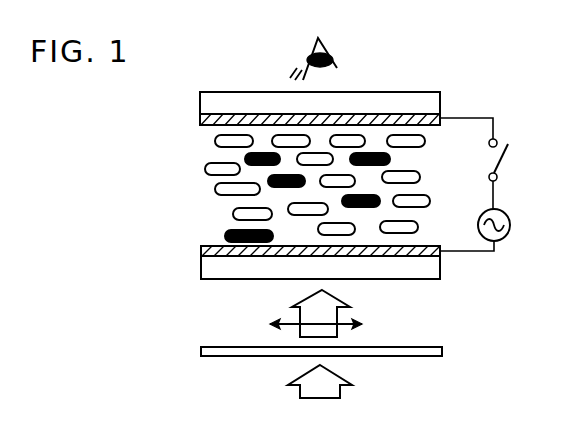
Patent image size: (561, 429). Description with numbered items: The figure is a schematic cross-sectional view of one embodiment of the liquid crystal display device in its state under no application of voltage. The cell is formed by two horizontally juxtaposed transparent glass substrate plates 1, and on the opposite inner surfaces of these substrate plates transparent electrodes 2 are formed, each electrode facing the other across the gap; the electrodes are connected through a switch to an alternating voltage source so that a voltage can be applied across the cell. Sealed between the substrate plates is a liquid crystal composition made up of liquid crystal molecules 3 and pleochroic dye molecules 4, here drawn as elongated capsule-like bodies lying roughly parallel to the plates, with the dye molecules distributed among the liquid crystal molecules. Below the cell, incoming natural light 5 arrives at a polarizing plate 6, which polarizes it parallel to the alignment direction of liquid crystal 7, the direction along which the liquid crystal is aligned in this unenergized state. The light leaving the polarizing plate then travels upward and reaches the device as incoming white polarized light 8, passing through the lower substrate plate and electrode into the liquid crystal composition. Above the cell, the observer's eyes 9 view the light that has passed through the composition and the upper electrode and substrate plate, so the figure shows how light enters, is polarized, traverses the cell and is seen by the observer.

The transparent glass substrate plate 1 is at (200, 100).
The transparent electrode 2 is at (200, 119).
The liquid crystal molecule 3 is at (222, 192).
The pleochroic dye molecule 4 is at (232, 237).
The incoming natural light 5 is at (299, 391).
The polarizing plate 6 is at (201, 355).
The alignment direction of liquid crystal 7 is at (272, 324).
The incoming white polarized light 8 is at (294, 307).
The observer's eyes 9 is at (337, 66).